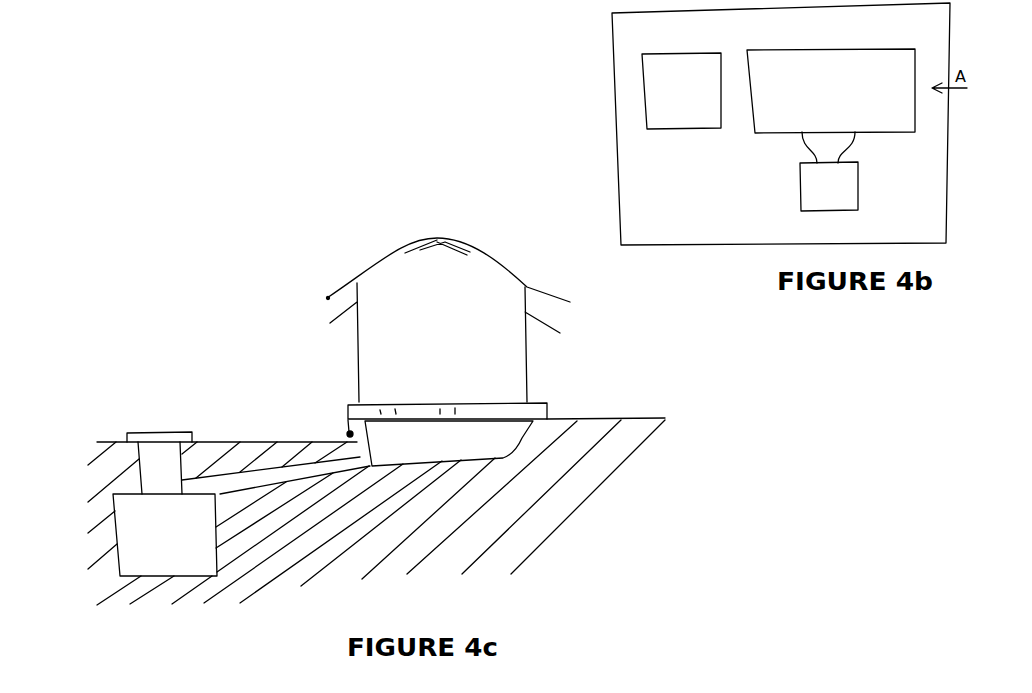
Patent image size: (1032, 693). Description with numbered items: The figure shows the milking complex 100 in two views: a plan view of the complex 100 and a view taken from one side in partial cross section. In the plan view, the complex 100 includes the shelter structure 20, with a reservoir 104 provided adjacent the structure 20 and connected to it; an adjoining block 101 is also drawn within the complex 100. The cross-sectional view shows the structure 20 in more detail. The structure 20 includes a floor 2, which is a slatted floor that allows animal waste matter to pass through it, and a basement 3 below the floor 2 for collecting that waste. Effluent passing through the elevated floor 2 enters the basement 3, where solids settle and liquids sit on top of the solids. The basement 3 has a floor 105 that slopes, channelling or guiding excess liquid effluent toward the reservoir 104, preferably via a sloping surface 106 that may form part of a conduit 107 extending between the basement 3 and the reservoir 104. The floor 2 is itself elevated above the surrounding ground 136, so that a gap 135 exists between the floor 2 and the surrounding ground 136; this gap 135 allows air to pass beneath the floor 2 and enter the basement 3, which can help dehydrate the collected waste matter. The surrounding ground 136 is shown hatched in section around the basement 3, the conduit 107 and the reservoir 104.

In FIG. 4B, the milking complex 100 is at (588, 137).
In FIG. 4B, the component block 101 is at (681, 91).
In FIG. 4B, the structure 20 is at (831, 91).
In FIG. 4C, the structure 20 is at (529, 256).
In FIG. 4B, the reservoir 104 is at (829, 171).
In FIG. 4C, the reservoir 104 is at (165, 504).
In FIG. 4C, the floor 2 is at (545, 403).
In FIG. 4C, the basement 3 is at (449, 443).
In FIG. 4C, the floor of the basement 105 is at (418, 465).
In FIG. 4C, the sloping surface 106 is at (315, 441).
In FIG. 4C, the conduit 107 is at (240, 470).
In FIG. 4C, the gap 135 is at (348, 433).
In FIG. 4C, the surrounding ground 136 is at (263, 434).